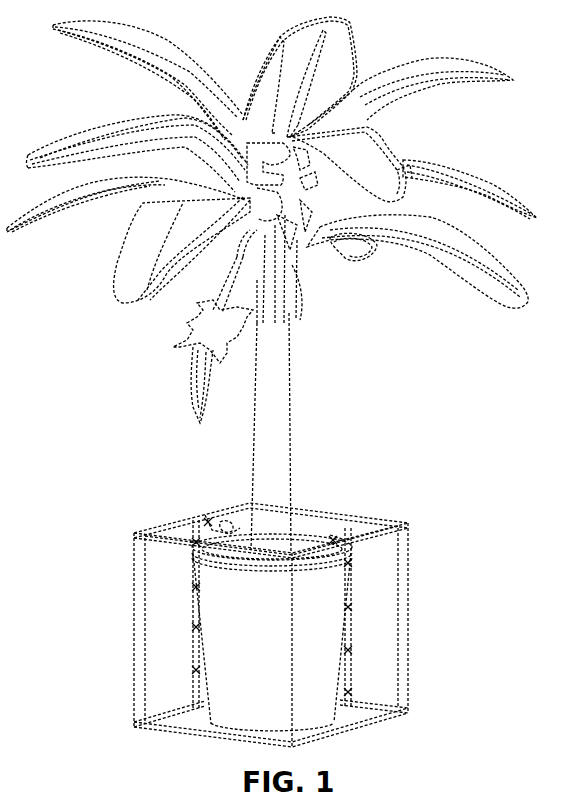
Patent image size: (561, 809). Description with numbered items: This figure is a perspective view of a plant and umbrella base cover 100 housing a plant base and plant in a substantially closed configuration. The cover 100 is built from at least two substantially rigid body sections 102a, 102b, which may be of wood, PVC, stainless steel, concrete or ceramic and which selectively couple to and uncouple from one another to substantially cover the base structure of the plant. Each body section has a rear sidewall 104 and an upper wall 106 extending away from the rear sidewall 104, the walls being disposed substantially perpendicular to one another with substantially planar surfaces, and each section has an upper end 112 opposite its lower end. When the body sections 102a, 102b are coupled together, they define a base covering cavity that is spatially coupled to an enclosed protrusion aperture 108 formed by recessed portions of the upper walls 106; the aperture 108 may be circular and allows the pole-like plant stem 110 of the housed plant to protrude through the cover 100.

The plant and umbrella base cover 100 is at (440, 538).
The substantially rigid body section 102a is at (180, 638).
The substantially rigid body section 102b is at (230, 510).
The rear sidewall 104 is at (180, 697).
The upper wall 106 is at (173, 535).
The enclosed protrusion aperture 108 is at (303, 525).
The plant stem 110 is at (257, 459).
The upper end 112 is at (350, 538).